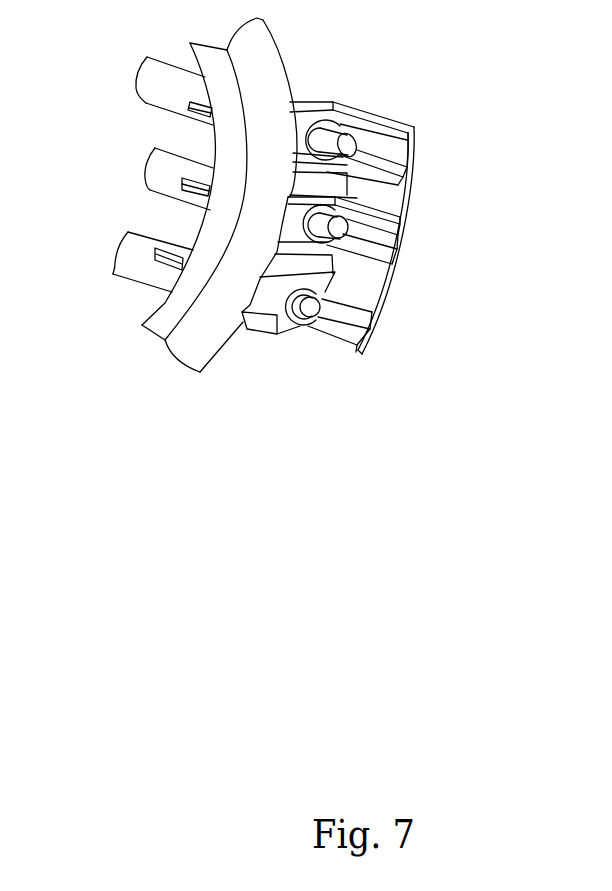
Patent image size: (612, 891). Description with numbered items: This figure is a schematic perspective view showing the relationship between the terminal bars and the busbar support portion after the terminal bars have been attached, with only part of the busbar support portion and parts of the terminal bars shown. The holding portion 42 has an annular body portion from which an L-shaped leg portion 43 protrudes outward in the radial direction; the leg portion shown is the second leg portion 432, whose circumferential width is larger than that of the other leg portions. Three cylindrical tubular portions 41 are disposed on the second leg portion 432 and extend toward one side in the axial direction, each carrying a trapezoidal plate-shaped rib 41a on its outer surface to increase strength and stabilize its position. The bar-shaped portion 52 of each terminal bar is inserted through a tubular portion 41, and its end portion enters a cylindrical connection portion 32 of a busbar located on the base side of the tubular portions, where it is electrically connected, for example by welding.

The connection portion 32 is at (318, 102).
The tubular portion 41 is at (158, 75).
The rib 41a is at (156, 252).
The holding portion 42 is at (203, 347).
The leg portion 43 is at (397, 228).
The second leg portion 432 is at (410, 200).
The bar-shaped portion 52 is at (353, 137).